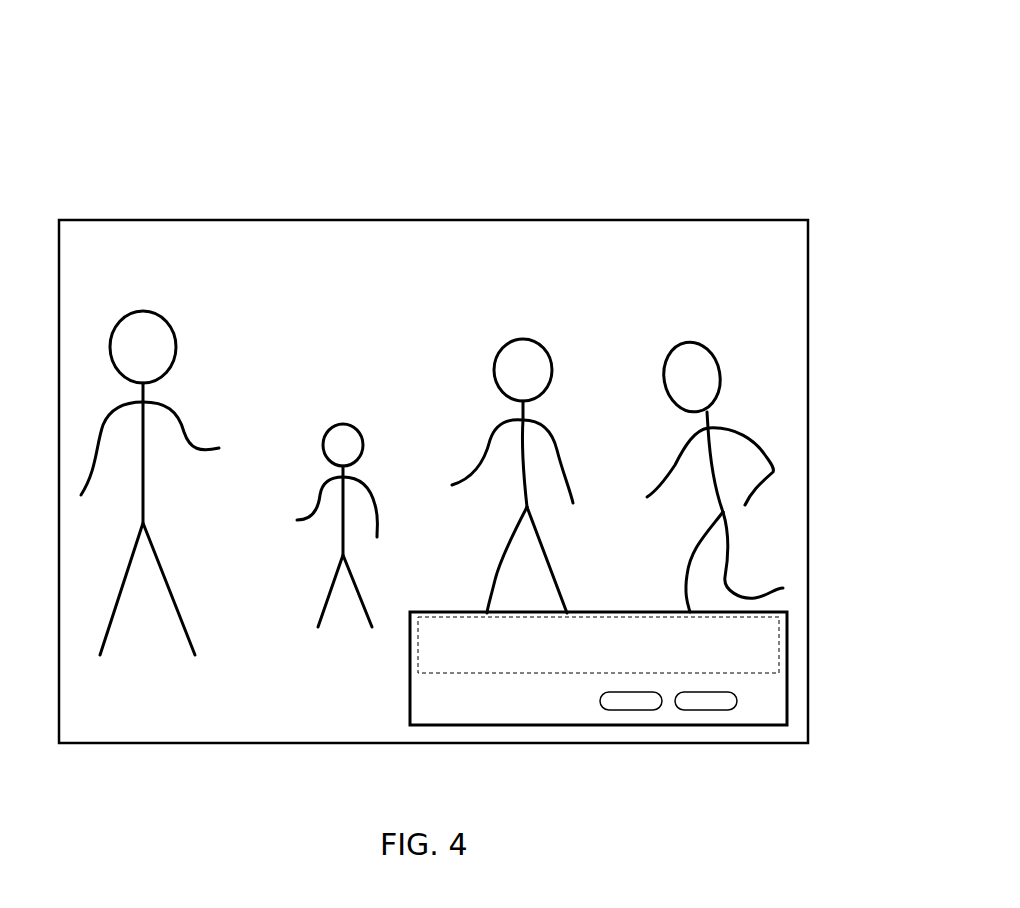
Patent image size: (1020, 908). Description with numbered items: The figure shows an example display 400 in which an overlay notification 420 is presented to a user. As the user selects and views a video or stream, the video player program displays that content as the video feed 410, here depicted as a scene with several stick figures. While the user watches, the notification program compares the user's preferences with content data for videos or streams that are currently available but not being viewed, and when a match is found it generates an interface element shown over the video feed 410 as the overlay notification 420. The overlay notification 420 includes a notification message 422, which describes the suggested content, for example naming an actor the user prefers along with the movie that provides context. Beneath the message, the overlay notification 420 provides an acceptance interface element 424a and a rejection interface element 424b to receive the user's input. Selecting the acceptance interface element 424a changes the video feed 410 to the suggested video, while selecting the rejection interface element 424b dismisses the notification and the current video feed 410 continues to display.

The display 400 is at (665, 143).
The video feed 410 is at (283, 240).
The overlay notification 420 is at (787, 668).
The notification message 422 is at (418, 654).
The acceptance interface element 424a is at (631, 710).
The rejection interface element 424b is at (706, 710).